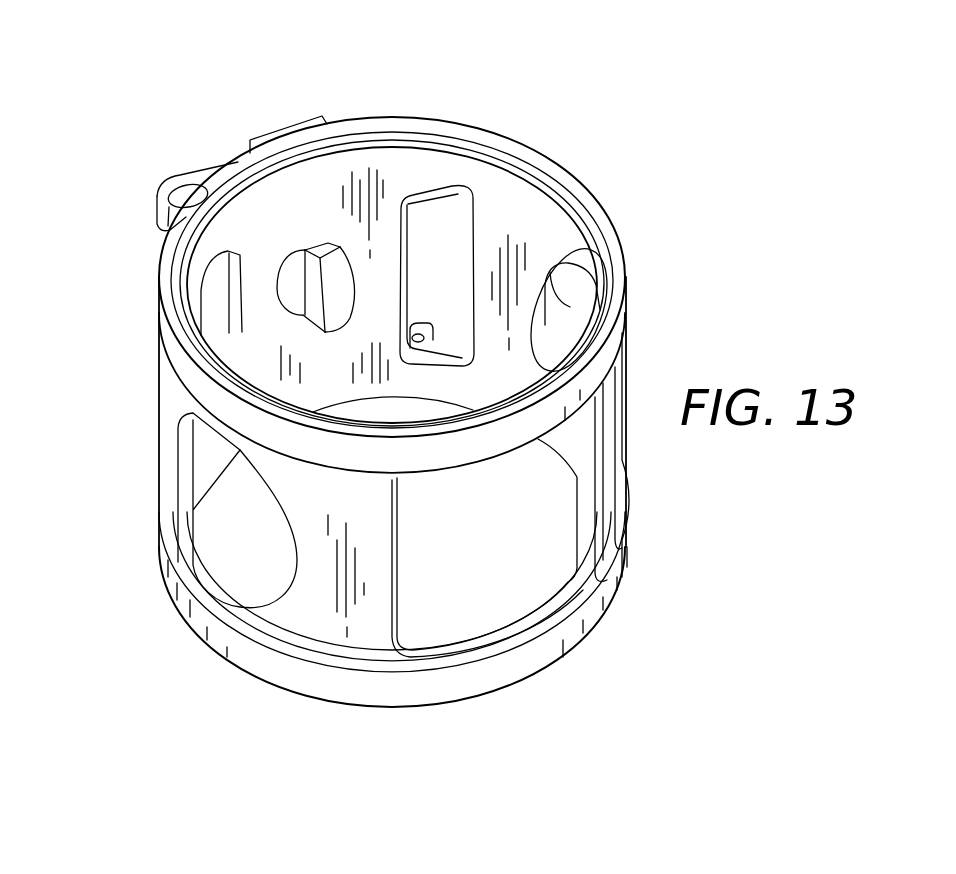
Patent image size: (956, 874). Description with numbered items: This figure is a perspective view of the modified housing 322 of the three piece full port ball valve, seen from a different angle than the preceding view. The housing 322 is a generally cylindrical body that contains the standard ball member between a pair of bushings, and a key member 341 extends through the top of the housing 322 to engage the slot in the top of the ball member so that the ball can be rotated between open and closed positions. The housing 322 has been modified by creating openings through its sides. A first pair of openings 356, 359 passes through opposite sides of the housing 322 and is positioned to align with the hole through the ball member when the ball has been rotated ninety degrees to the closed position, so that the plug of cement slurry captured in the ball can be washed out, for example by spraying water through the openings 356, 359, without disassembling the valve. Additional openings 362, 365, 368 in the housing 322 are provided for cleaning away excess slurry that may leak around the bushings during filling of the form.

The modified housing 322 is at (222, 665).
The key member 341 is at (317, 292).
The opening 356 is at (210, 512).
The opening 359 is at (550, 265).
The additional opening 362 is at (517, 583).
The additional opening 365 is at (442, 228).
The additional opening 368 is at (217, 291).